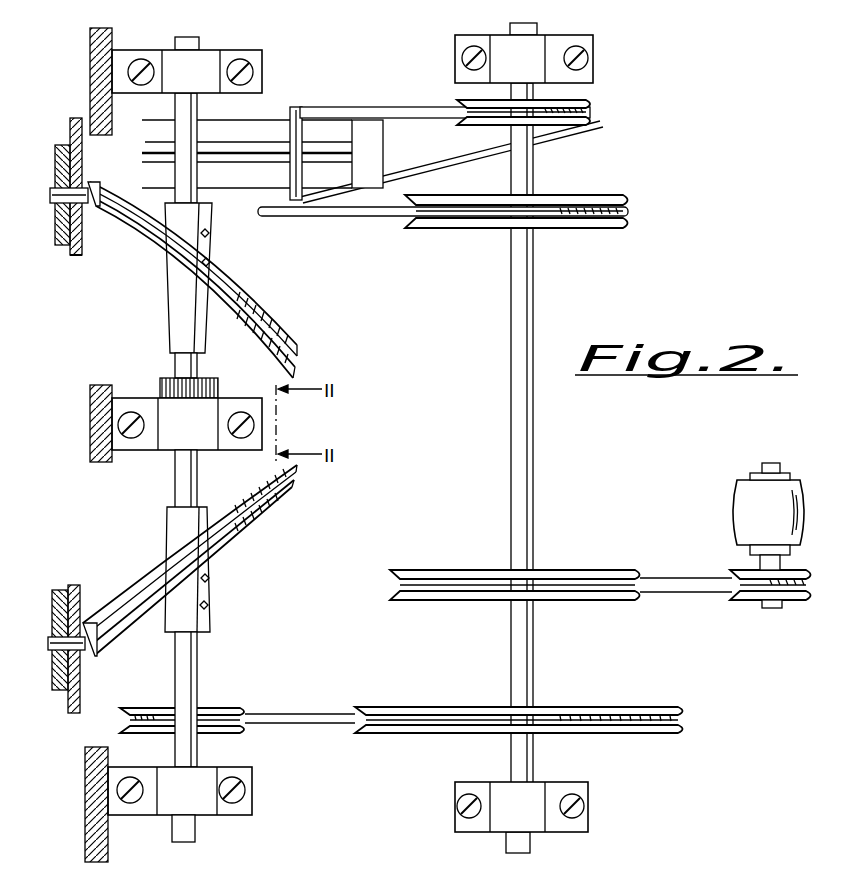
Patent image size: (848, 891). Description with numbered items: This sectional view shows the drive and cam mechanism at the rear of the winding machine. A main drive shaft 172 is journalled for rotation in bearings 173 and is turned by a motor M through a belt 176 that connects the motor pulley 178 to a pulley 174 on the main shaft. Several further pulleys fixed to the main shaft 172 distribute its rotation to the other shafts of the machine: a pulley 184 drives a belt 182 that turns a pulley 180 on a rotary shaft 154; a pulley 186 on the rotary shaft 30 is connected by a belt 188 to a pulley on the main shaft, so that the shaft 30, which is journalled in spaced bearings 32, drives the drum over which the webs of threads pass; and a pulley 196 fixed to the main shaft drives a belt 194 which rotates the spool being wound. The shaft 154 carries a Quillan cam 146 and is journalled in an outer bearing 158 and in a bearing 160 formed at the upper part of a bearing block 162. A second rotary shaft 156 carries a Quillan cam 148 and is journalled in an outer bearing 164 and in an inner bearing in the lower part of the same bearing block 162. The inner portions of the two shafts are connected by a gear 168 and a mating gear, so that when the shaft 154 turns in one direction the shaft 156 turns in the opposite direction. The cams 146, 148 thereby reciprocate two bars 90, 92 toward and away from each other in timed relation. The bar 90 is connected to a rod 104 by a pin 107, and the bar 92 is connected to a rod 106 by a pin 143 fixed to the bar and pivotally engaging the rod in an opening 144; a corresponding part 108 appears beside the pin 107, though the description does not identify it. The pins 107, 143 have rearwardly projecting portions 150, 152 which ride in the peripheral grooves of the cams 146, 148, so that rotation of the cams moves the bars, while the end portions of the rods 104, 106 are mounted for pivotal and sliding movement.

The rotary shaft 30 is at (212, 146).
The bearings 32 is at (383, 143).
The bar 90 is at (592, 107).
The bar 92 is at (76, 257).
The rod 104 is at (62, 695).
The rod 106 is at (64, 150).
The pin 107 is at (48, 645).
The plate 108 is at (52, 640).
The pin 143 is at (50, 193).
The opening 144 is at (57, 226).
The Quillan cam 146 is at (262, 527).
The Quillan cam 148 is at (274, 321).
The rearwardly projecting portion 150 is at (99, 653).
The rearwardly projecting portion 152 is at (97, 190).
The rotary shaft 154 is at (197, 659).
The rotary shaft 156 is at (177, 363).
The outer bearing 158 is at (205, 810).
The bearing 160 is at (203, 443).
The bearing block 162 is at (150, 453).
The outer bearing 164 is at (205, 62).
The gear 168 is at (160, 386).
The main drive shaft 172 is at (535, 298).
The bearings 173 is at (542, 46).
The pulley 174 is at (548, 573).
The belt 176 is at (677, 576).
The motor pulley 178 is at (742, 602).
The pulley 180 is at (228, 709).
The belt 182 is at (290, 714).
The pulley 184 is at (390, 712).
The pulley 186 is at (292, 110).
The belt 188 is at (359, 107).
The belt 194 is at (378, 216).
The pulley 196 is at (628, 203).
The motor M is at (748, 510).